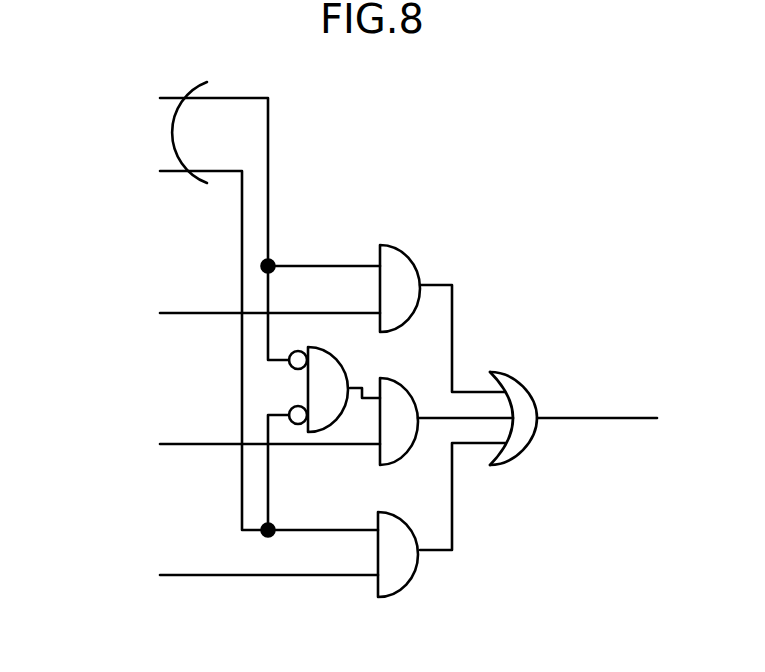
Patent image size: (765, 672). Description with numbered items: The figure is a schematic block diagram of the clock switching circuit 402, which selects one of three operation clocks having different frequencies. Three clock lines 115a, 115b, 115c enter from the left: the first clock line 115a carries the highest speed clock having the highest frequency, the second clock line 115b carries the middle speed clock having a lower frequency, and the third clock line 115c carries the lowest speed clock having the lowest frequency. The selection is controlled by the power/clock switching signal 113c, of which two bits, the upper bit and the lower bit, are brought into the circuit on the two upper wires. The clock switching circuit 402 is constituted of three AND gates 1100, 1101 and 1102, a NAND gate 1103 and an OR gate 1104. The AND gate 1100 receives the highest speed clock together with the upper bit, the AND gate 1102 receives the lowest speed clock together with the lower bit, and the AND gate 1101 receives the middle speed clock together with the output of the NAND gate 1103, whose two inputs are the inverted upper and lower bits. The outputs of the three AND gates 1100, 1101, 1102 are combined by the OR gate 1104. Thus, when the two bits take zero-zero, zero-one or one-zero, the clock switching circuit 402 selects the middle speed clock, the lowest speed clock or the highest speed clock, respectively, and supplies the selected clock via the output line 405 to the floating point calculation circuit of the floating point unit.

The clock switching circuit 402 is at (478, 136).
The power/clock switching signal 113c is at (170, 132).
The clock line 115a is at (188, 311).
The clock line 115b is at (188, 442).
The clock line 115c is at (188, 574).
The AND gate 1100 is at (412, 262).
The AND gate 1101 is at (397, 466).
The AND gate 1102 is at (378, 592).
The NAND gate 1103 is at (320, 435).
The OR gate 1104 is at (497, 370).
The line 405 is at (583, 417).